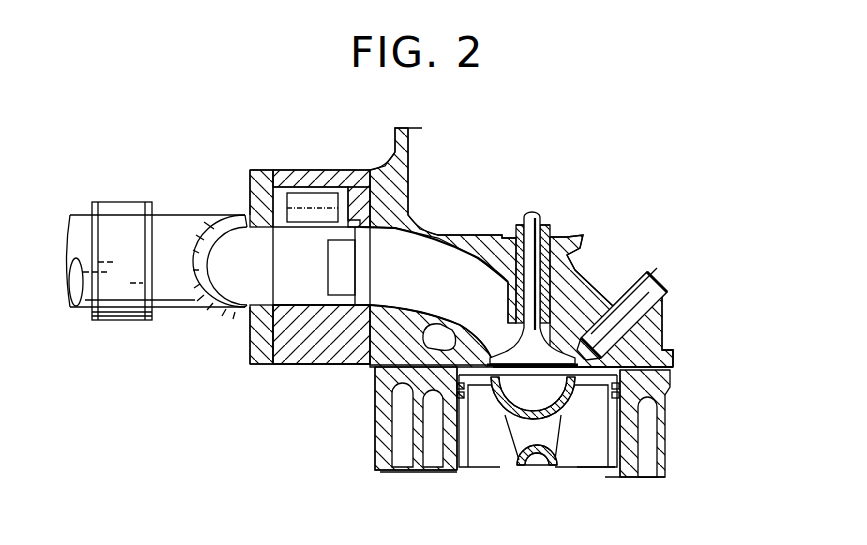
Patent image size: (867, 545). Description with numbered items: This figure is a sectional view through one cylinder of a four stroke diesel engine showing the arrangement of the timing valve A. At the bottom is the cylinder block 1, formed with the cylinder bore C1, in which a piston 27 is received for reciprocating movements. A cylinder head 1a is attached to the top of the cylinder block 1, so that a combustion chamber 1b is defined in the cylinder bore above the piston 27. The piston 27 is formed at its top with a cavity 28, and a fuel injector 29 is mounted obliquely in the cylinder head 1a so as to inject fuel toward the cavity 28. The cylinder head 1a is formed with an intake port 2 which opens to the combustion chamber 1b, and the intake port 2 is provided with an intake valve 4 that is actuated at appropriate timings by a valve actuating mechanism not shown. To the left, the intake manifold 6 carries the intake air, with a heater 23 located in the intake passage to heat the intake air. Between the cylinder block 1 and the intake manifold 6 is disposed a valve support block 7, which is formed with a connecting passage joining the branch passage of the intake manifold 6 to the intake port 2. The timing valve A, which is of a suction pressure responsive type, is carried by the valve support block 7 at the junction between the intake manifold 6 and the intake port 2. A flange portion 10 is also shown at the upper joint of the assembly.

The cylinder block 1 is at (677, 290).
The cylinder head 1a is at (660, 356).
The combustion chamber 1b is at (563, 394).
The intake port 2 is at (443, 253).
The intake valve 4 is at (556, 342).
The intake manifold 6 is at (248, 333).
The valve support block 7 is at (315, 367).
The mounting flange 10 is at (407, 218).
The heater 23 is at (129, 202).
The piston 27 is at (620, 433).
The cavity 28 is at (566, 406).
The fuel injector 29 is at (618, 306).
The timing valve A is at (327, 222).
The cylinder bore C1 is at (458, 436).